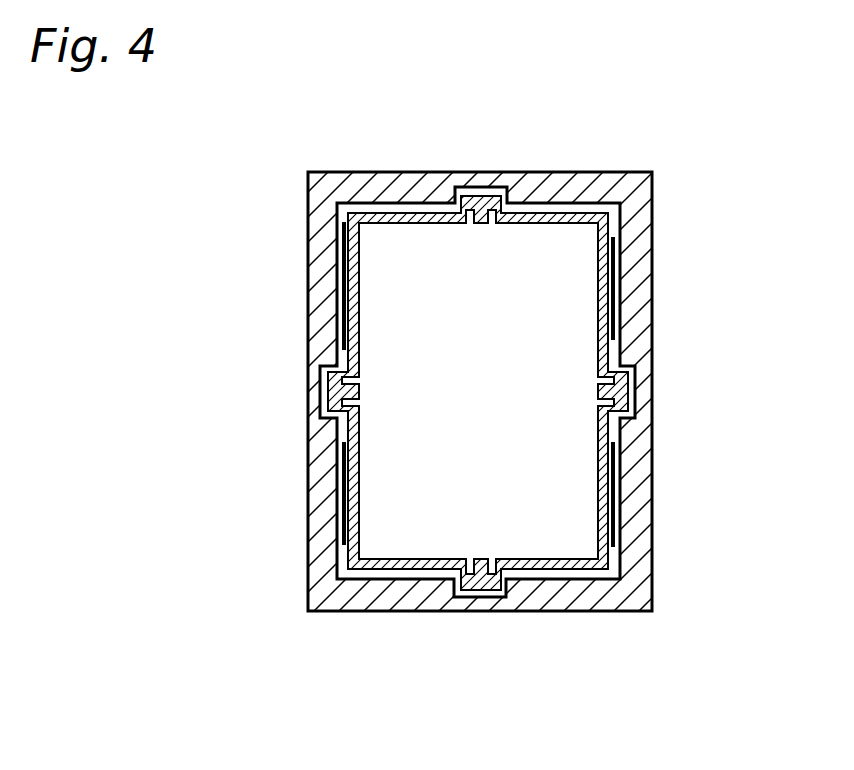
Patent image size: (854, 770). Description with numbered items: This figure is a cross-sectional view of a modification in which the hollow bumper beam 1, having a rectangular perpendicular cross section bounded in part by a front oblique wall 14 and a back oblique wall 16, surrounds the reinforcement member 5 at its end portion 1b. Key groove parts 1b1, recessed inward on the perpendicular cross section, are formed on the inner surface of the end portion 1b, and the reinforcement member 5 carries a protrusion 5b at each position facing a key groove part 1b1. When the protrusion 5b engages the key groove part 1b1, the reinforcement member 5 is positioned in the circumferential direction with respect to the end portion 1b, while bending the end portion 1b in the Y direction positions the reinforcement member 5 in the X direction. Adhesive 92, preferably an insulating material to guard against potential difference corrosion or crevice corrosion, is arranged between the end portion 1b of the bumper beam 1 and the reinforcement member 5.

The bumper beam 1 is at (594, 108).
The end portion 1b is at (632, 155).
The key groove part 1b1 is at (484, 188).
The reinforcement member 5 is at (590, 210).
The protrusion 5b is at (470, 199).
The front oblique wall 14 is at (637, 324).
The back oblique wall 16 is at (325, 318).
The adhesive 92 is at (343, 262).